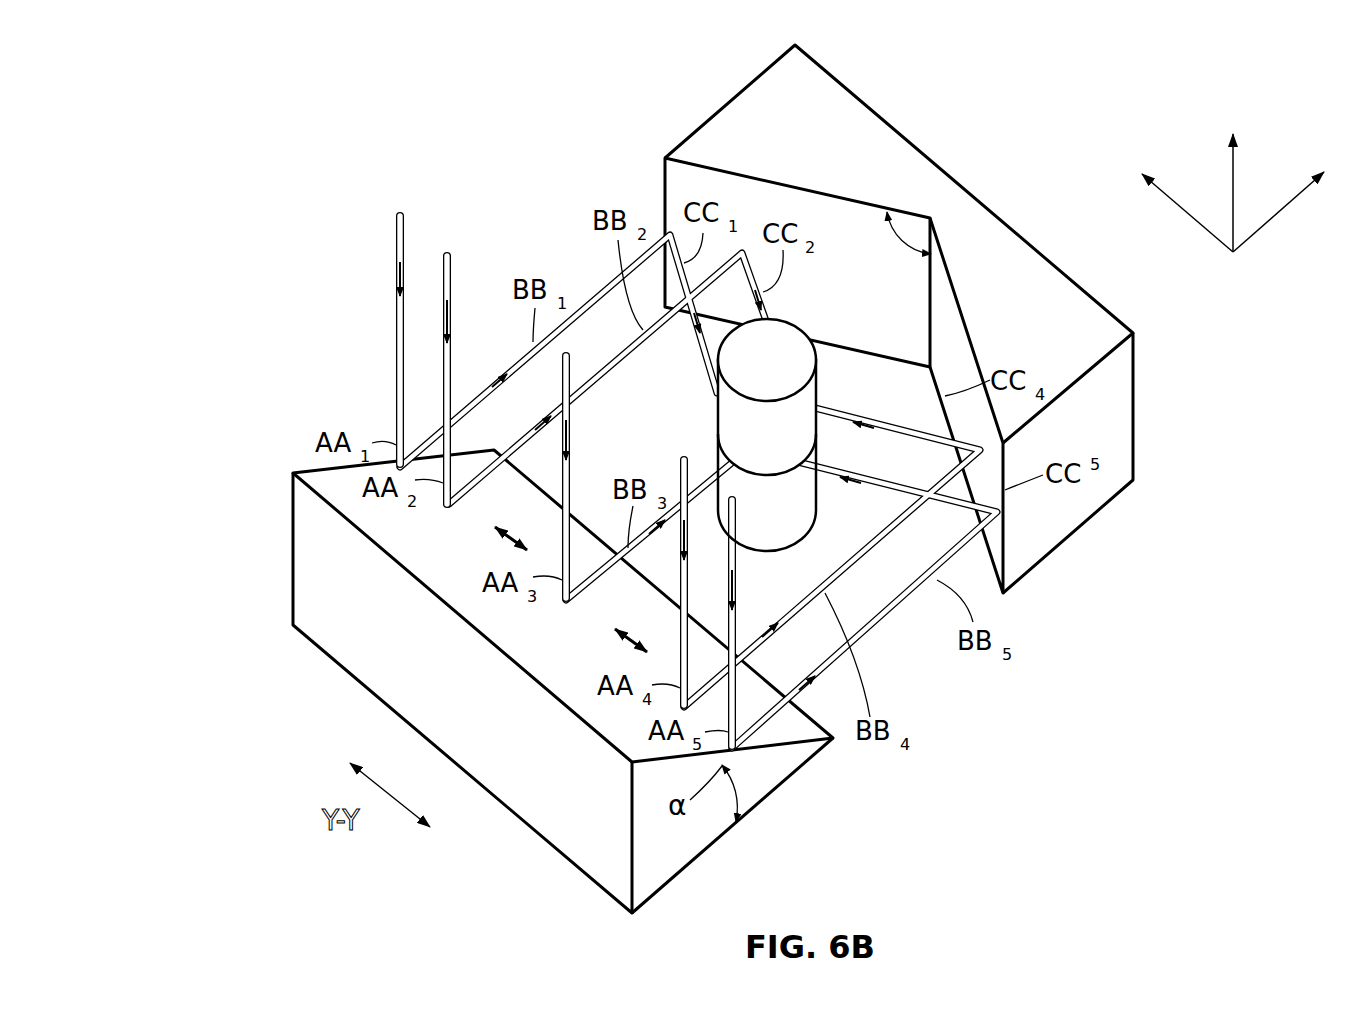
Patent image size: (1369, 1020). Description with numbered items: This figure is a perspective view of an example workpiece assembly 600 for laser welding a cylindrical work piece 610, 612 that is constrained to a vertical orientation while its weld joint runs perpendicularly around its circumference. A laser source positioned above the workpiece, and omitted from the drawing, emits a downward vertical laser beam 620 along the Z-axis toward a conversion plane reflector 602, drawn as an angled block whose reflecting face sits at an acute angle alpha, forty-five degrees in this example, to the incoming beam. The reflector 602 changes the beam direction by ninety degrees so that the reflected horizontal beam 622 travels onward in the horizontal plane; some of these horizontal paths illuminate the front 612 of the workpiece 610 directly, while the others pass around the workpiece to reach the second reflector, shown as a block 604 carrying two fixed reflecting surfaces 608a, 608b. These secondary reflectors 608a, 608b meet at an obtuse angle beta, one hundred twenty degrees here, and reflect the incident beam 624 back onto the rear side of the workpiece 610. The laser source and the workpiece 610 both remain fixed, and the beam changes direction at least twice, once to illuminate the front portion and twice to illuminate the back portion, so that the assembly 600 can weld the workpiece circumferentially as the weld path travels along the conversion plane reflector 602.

The workpiece assembly 600 is at (178, 150).
The conversion plane reflector 602 is at (757, 783).
The second block 604 is at (935, 319).
The secondary reflector 608a is at (860, 216).
The secondary reflector 608b is at (945, 313).
The workpiece 610 is at (790, 345).
The front of the workpiece 612 is at (795, 520).
The laser beam 620 is at (396, 337).
The reflected horizontal beam 622 is at (493, 380).
The incident beam 624 is at (766, 298).